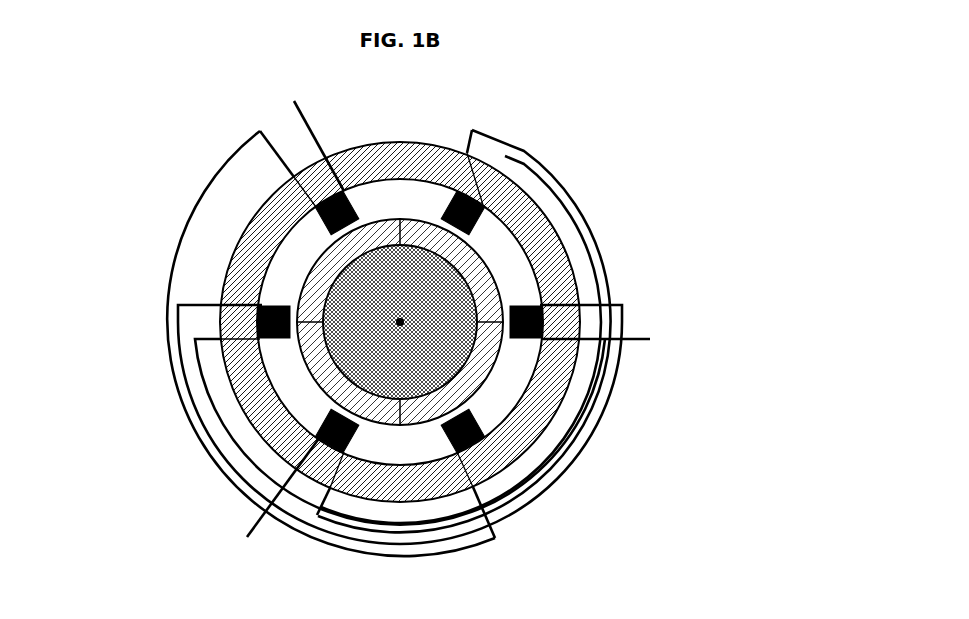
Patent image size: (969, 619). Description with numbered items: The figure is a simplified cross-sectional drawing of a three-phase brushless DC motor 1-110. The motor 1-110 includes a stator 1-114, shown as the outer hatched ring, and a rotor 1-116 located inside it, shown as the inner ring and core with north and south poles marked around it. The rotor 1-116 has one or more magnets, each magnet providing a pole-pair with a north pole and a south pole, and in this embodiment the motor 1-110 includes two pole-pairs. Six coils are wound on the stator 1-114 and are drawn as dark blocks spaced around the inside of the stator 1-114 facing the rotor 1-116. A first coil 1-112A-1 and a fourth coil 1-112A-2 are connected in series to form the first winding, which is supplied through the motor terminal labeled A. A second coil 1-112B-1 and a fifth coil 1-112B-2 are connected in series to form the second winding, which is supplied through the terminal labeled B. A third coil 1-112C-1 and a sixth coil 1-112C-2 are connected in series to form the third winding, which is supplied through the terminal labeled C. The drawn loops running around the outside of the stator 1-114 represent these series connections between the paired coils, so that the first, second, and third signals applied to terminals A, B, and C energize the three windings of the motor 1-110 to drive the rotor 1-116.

The motor 1-110 is at (110, 99).
The first coil 1-112A-1 is at (307, 177).
The fourth coil 1-112A-2 is at (465, 452).
The second coil 1-112B-1 is at (318, 428).
The fifth coil 1-112B-2 is at (475, 203).
The third coil 1-112C-1 is at (543, 303).
The sixth coil 1-112C-2 is at (258, 303).
The stator 1-114 is at (243, 250).
The rotor 1-116 is at (362, 334).